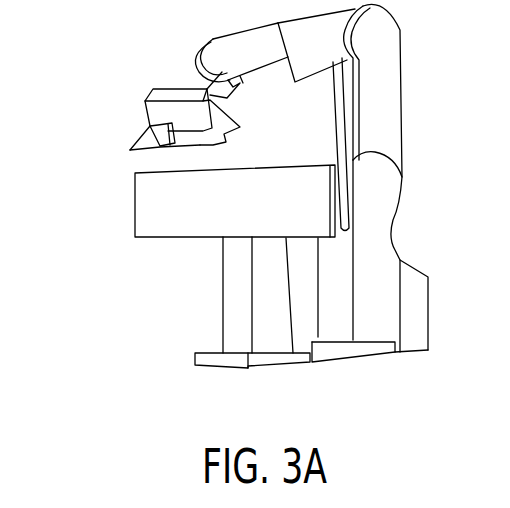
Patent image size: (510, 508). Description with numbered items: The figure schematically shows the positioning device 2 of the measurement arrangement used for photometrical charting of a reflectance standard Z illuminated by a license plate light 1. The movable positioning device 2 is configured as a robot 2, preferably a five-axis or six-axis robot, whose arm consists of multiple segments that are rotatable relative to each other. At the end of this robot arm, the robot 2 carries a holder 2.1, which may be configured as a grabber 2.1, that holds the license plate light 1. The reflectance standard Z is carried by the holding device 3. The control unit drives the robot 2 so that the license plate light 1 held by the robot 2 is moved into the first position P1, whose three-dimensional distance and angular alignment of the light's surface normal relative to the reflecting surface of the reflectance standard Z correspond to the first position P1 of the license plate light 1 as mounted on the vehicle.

The license plate light 1 is at (130, 143).
The movable positioning device 2 is at (392, 88).
The holder 2.1 is at (182, 108).
The holding device 3 is at (237, 303).
The first position P1 is at (147, 113).
The reflectance standard Z is at (160, 218).